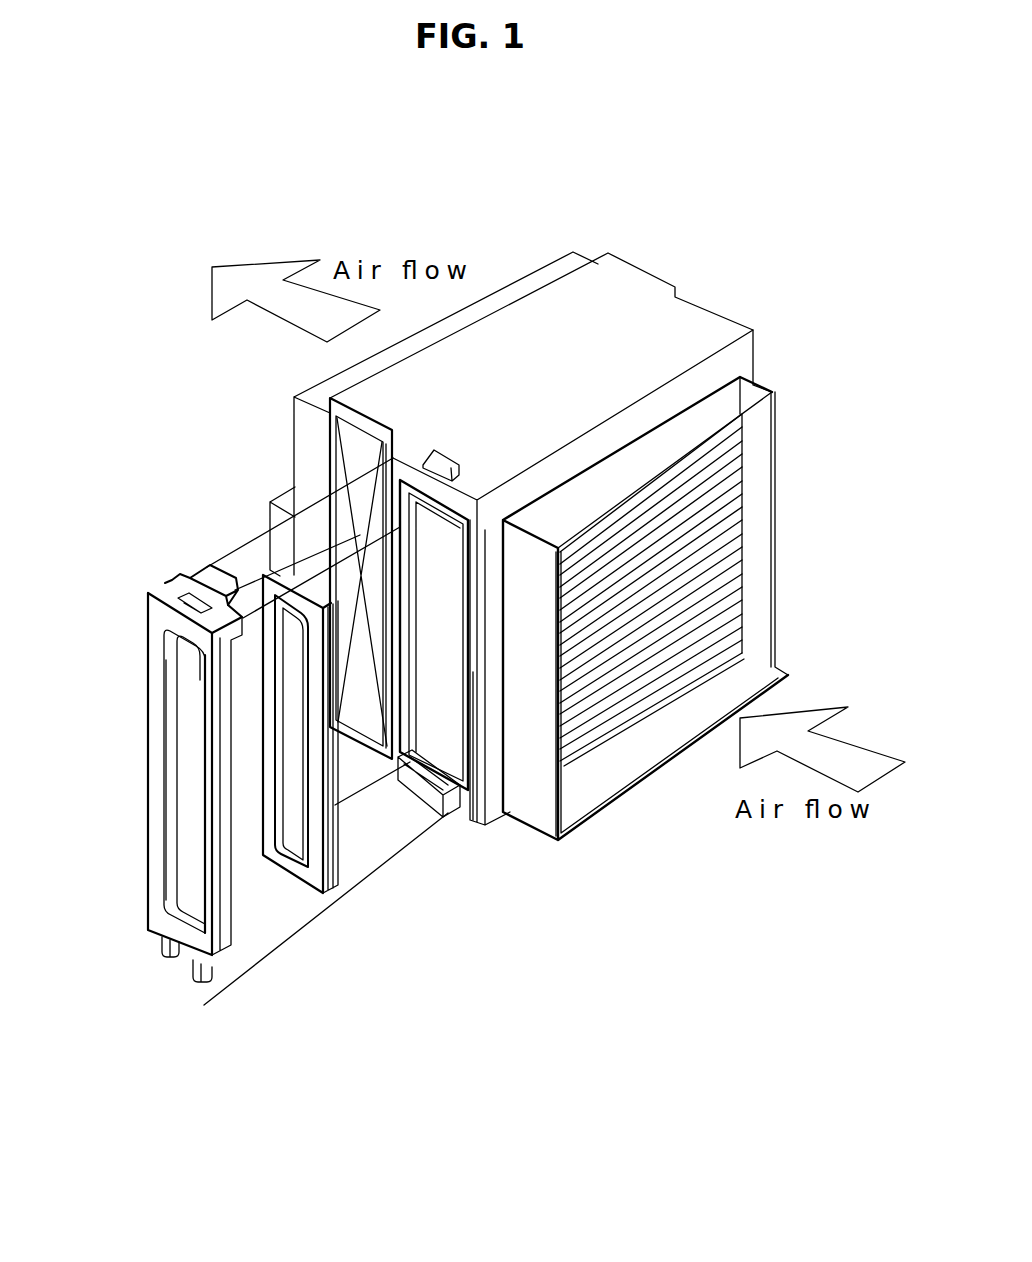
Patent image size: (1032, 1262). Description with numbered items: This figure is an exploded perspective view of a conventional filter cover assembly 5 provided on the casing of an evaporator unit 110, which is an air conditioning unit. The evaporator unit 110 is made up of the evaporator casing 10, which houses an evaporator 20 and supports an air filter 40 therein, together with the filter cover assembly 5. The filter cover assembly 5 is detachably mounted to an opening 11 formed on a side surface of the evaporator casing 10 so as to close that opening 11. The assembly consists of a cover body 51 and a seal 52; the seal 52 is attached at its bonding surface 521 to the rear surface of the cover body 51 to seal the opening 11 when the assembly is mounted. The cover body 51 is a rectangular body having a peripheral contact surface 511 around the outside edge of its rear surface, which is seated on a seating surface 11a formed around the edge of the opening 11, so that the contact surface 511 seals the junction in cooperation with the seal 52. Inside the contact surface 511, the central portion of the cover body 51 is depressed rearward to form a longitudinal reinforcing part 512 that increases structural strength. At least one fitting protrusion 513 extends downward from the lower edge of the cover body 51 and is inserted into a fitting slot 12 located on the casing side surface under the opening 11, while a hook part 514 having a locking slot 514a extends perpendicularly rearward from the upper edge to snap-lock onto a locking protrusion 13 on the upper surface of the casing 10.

The evaporator unit 110 is at (680, 228).
The evaporator casing 10 is at (722, 298).
The opening 11 is at (458, 585).
The seating surface 11a is at (472, 674).
The fitting slot 12 is at (455, 818).
The locking protrusion 13 is at (440, 455).
The evaporator 20 is at (348, 447).
The air filter 40 is at (722, 530).
The filter cover assembly 5 is at (335, 1076).
The cover body 51 is at (202, 988).
The peripheral contact surface 511 is at (232, 948).
The longitudinal reinforcing part 512 is at (185, 677).
The fitting protrusion 513 is at (193, 977).
The hook part 514 is at (172, 580).
The locking slot 514a is at (184, 598).
The seal 52 is at (333, 890).
The bonding surface 521 is at (318, 860).